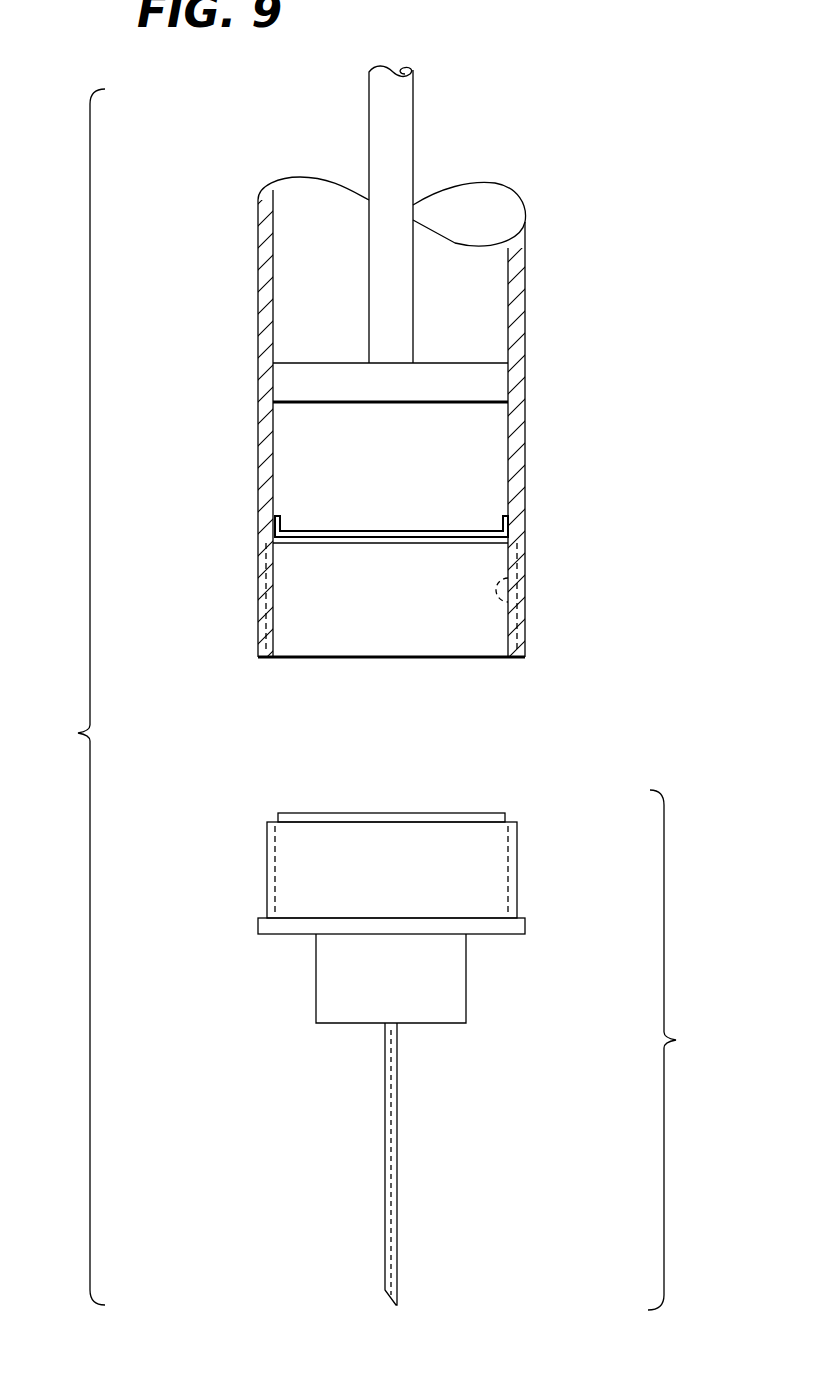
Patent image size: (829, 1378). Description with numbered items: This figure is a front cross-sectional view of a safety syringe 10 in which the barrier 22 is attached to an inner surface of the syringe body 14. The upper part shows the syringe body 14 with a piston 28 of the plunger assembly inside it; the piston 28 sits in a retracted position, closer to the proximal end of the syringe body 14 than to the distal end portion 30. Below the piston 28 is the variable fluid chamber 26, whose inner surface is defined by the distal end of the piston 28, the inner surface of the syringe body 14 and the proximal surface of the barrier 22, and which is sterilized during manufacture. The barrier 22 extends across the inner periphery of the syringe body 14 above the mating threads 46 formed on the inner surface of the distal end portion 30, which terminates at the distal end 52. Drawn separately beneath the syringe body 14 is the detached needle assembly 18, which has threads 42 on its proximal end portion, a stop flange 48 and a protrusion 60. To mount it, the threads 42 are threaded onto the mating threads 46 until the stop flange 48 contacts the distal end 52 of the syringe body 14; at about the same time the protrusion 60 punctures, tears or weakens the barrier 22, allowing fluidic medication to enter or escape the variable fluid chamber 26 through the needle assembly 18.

The safety syringe 10 is at (73, 697).
The syringe body 14 is at (517, 302).
The needle assembly 18 is at (680, 1050).
The barrier 22 is at (457, 530).
The variable fluid chamber 26 is at (305, 445).
The piston 28 is at (485, 380).
The distal end portion 30 is at (586, 534).
The threads 42 is at (270, 880).
The mating threads 46 is at (528, 597).
The stop flange 48 is at (518, 935).
The distal end 52 is at (517, 657).
The protrusion 60 is at (305, 812).